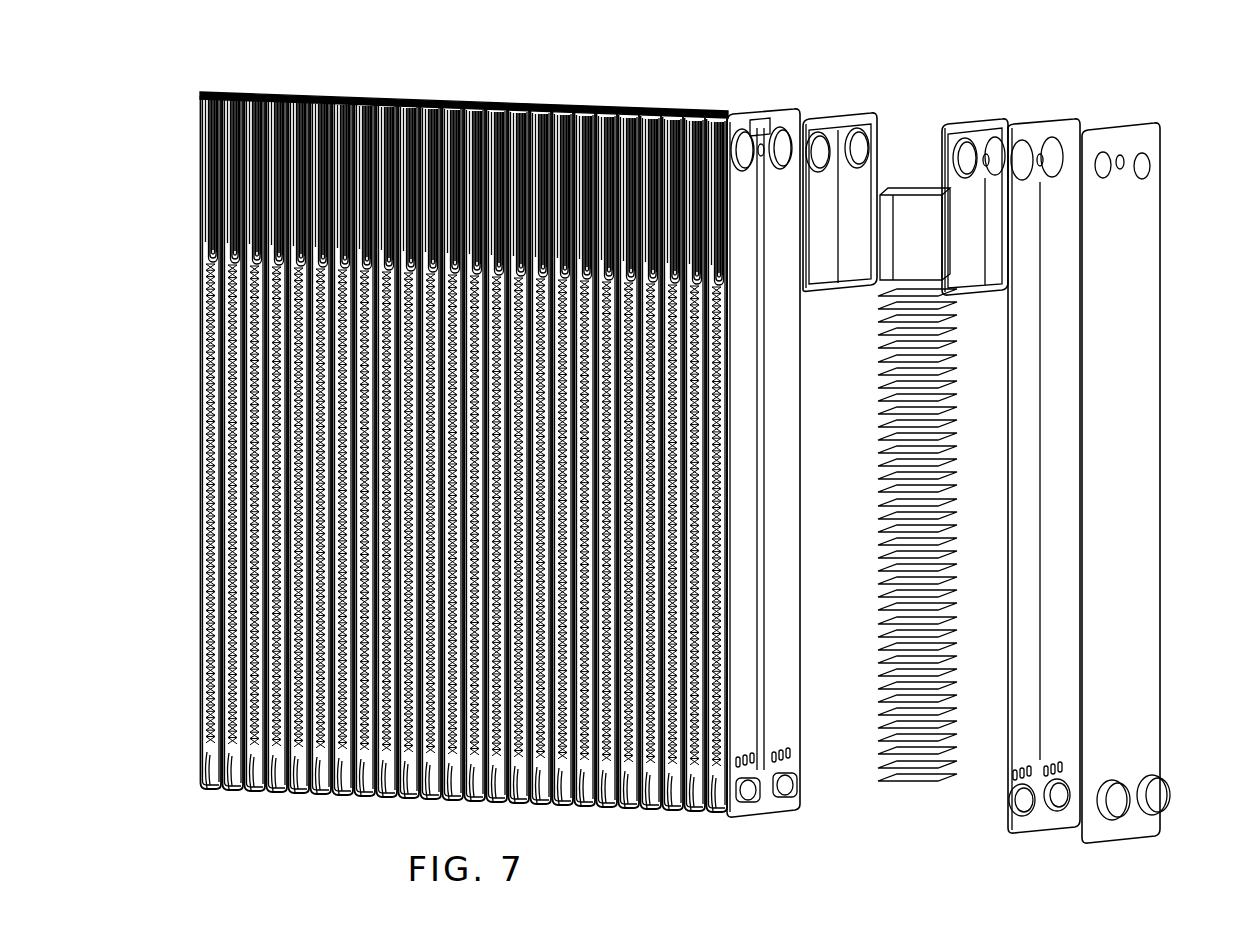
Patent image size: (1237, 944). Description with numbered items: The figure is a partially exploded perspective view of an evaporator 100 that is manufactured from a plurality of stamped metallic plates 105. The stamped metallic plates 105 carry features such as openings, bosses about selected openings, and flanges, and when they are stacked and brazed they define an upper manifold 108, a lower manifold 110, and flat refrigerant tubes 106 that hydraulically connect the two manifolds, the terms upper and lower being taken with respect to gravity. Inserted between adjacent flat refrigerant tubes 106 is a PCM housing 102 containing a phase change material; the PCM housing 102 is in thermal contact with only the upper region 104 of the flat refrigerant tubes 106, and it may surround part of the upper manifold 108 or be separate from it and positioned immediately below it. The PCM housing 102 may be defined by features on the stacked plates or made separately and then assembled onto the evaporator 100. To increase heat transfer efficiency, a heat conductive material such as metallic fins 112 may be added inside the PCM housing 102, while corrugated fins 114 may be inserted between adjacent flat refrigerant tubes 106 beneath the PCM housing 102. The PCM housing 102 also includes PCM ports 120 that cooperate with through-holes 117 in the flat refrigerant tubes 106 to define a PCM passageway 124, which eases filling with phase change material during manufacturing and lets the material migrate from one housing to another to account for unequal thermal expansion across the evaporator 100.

The evaporator 100 is at (1132, 81).
The PCM housing 102 is at (803, 107).
The upper region 104 is at (180, 100).
The stamped metallic plates 105 is at (1008, 740).
The flat refrigerant tubes 106 is at (427, 737).
The upper manifold 108 is at (748, 137).
The lower manifold 110 is at (755, 790).
The metallic fins 112 is at (923, 218).
The corrugated fins 114 is at (935, 660).
The through-holes 117 is at (1047, 162).
The PCM ports 120 is at (987, 160).
The PCM passageway 124 is at (773, 140).